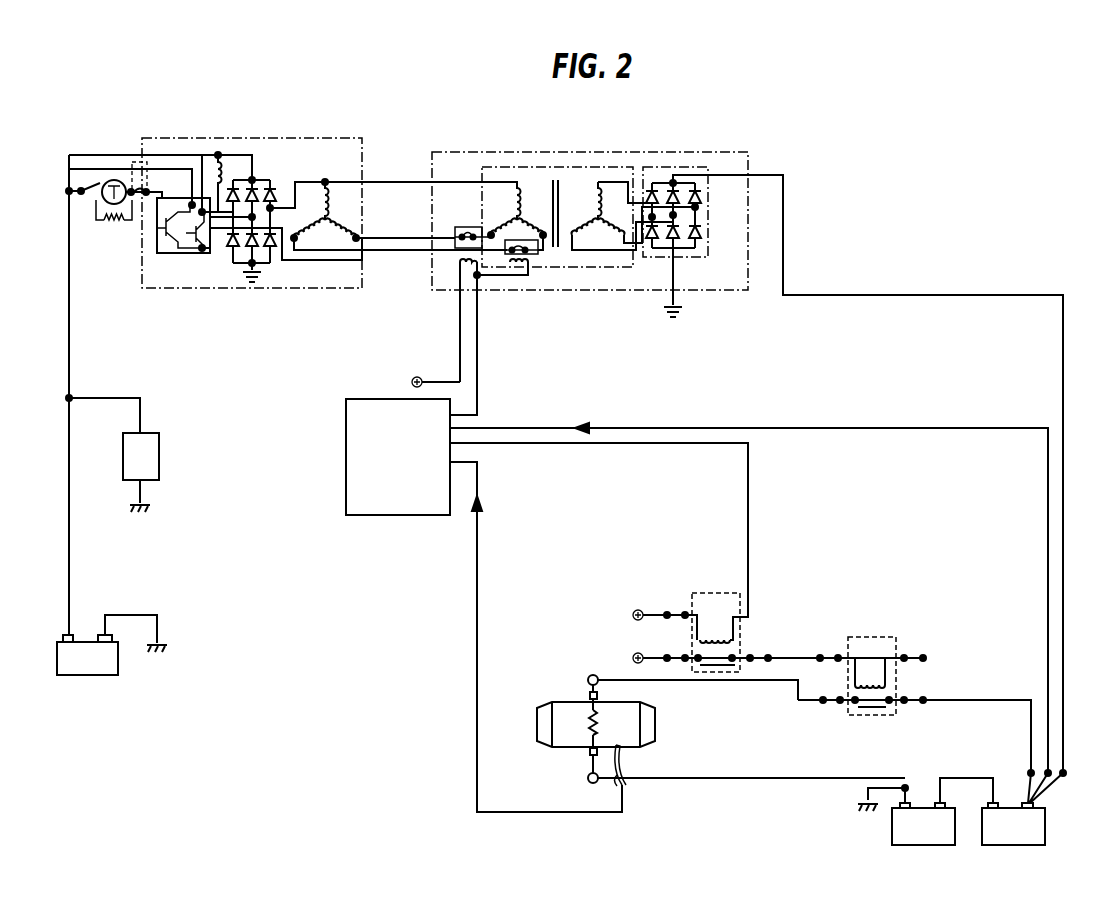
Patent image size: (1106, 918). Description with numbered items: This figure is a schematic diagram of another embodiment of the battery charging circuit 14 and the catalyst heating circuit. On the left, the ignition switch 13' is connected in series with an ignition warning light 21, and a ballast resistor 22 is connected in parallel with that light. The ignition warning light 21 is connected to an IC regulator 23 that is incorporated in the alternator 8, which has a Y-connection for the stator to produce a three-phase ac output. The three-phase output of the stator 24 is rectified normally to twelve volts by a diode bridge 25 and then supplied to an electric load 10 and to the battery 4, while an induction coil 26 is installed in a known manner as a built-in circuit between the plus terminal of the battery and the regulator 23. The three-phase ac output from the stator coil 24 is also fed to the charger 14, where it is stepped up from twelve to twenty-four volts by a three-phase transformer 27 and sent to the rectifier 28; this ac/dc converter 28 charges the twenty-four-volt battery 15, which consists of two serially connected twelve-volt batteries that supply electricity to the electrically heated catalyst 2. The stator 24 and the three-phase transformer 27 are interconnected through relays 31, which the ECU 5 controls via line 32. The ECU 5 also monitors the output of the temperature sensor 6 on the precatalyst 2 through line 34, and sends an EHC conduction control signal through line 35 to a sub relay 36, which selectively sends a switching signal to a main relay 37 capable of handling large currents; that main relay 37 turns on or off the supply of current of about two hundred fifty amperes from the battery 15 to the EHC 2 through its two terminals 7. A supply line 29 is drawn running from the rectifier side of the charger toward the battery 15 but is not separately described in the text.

The precatalyst 2 is at (630, 722).
The battery 4 is at (86, 677).
The ECU 5 is at (387, 517).
The temperature sensor 6 is at (628, 748).
The terminals 7 is at (590, 694).
The alternator 8 is at (348, 274).
The electric load 10 is at (141, 432).
The ignition switch 13' is at (62, 204).
The battery charging circuit 14 is at (717, 291).
The 24-V battery 15 is at (1003, 847).
The ignition warning light 21 is at (112, 180).
The ballast resistor 22 is at (117, 222).
The IC regulator 23 is at (184, 255).
The stator 24 is at (325, 240).
The diode bridge 25 is at (233, 266).
The induction coil 26 is at (221, 163).
The 3-phase transformer 27 is at (543, 154).
The rectifier 28 is at (656, 154).
The supply line 29 is at (785, 236).
The relays 31 is at (458, 255).
The line 32 is at (479, 372).
The line 34 is at (476, 630).
The line 35 is at (748, 498).
The sub relay 36 is at (742, 640).
The main relay 37 is at (898, 652).